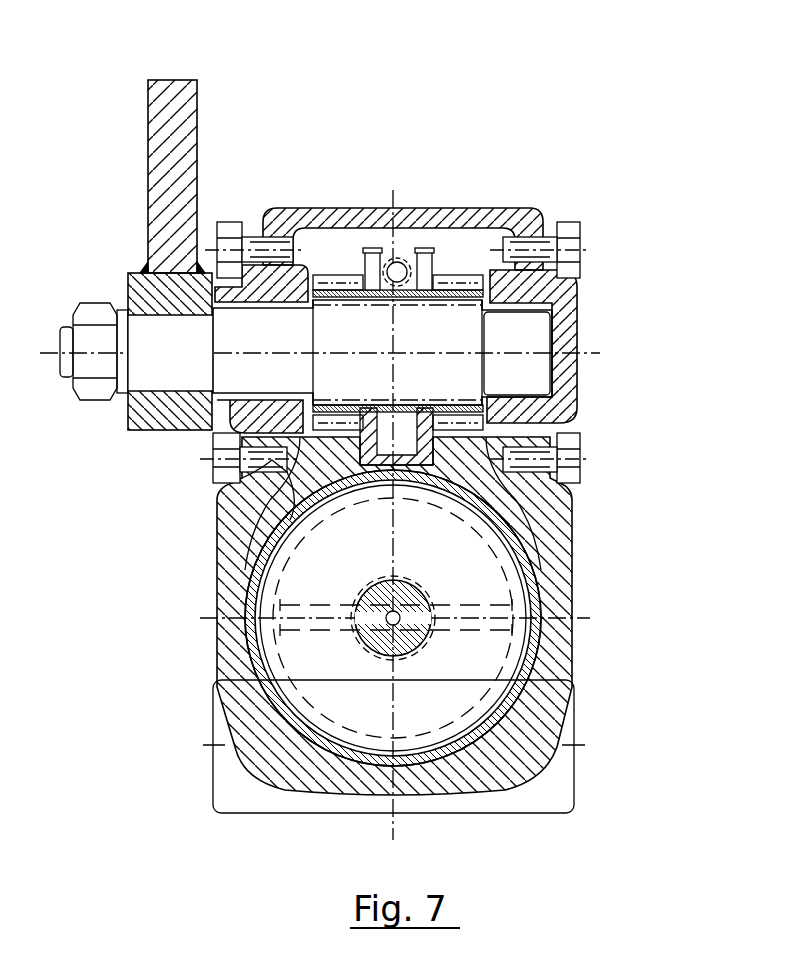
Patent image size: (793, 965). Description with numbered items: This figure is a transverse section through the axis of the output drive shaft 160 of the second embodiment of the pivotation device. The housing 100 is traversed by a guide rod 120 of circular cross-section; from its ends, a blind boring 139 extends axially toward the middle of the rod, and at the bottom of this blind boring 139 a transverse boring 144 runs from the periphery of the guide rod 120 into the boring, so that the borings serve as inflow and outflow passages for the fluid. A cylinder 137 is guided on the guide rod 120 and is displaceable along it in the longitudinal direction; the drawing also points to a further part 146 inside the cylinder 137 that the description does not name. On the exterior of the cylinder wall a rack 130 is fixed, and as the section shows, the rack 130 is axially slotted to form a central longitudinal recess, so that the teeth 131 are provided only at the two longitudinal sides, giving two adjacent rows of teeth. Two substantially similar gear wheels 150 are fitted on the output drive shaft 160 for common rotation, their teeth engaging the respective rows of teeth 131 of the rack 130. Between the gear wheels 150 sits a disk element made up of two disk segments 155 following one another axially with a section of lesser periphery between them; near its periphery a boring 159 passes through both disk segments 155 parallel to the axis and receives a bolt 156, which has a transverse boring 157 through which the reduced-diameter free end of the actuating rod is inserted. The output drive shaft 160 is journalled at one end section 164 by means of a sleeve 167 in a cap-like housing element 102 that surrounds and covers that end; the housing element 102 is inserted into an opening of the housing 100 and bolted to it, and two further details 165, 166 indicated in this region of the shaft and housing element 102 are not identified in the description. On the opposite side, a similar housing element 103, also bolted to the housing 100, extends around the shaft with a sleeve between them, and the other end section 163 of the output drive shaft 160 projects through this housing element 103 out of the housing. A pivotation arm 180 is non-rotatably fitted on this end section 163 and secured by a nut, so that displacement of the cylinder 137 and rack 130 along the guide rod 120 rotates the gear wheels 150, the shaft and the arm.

The housing 100 is at (510, 757).
The cap-like housing element 102 is at (567, 298).
The housing element 103 is at (217, 425).
The guide rod 120 is at (382, 640).
The rack 130 is at (360, 433).
The teeth 131 is at (487, 427).
The cylinder 137 is at (445, 755).
The blind boring 139 is at (393, 618).
The transverse boring 144 is at (433, 620).
The gear 146 is at (455, 568).
The gear wheels 150 is at (337, 283).
The disk segments 155 is at (285, 478).
The bolt 156 is at (410, 257).
The transverse boring 157 is at (392, 206).
The boring 159 is at (433, 268).
The output drive shaft 160 is at (147, 267).
The end section 163 is at (188, 373).
The end section 164 is at (523, 378).
The seal 165 is at (477, 303).
The shaft bore 166 is at (452, 328).
The sleeve 167 is at (557, 402).
The pivotation arm 180 is at (170, 120).